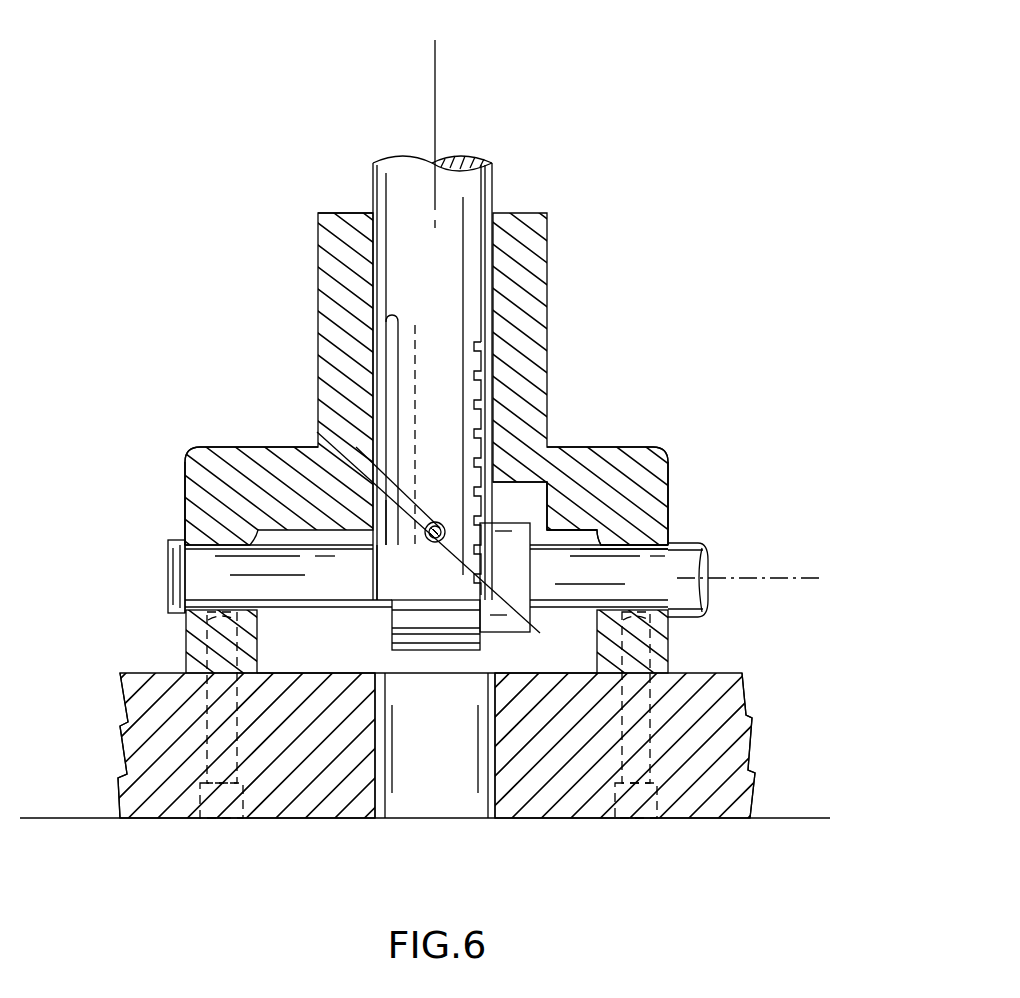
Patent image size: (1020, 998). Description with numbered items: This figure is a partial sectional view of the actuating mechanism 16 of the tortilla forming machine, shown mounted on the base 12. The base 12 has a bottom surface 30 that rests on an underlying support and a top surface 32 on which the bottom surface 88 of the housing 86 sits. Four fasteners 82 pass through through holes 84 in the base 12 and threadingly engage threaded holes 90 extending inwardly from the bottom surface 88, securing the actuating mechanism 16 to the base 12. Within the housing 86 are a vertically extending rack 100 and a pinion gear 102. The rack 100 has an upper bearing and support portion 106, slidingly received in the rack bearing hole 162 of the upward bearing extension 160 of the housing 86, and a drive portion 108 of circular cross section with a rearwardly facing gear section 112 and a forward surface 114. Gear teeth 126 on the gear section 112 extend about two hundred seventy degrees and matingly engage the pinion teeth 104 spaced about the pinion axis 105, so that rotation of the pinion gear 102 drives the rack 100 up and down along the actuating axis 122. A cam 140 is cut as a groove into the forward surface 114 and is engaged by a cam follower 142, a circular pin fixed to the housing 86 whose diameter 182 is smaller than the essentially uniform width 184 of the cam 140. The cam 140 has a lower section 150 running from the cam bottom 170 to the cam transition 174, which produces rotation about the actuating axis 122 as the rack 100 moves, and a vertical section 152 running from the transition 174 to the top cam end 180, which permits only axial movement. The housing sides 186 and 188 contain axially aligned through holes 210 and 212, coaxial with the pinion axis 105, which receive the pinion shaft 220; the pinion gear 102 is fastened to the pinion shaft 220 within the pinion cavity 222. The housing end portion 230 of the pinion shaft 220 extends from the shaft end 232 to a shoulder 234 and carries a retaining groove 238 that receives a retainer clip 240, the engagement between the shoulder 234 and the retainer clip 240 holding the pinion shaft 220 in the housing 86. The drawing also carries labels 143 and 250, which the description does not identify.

The base 12 is at (757, 683).
The actuating mechanism 16 is at (648, 378).
The bottom surface 30 is at (692, 820).
The top surface 32 is at (160, 672).
The fasteners 82 is at (222, 706).
The through holes 84 is at (240, 742).
The housing 86 is at (672, 452).
The bottom surface 88 is at (690, 677).
The threaded holes 90 is at (227, 635).
The rack 100 is at (473, 278).
The pinion gear 102 is at (478, 648).
The pinion teeth 104 is at (450, 652).
The pinion axis 105 is at (780, 578).
The upper bearing and support portion 106 is at (472, 252).
The drive portion 108 is at (457, 362).
The gear section 112 is at (495, 390).
The forward surface 114 is at (432, 400).
The actuating axis 122 is at (440, 85).
The gear teeth 126 is at (493, 512).
The cam 140 is at (445, 520).
The cam follower 142 is at (488, 538).
The lower plate 143 is at (500, 597).
The lower section 150 is at (418, 498).
The vertical section 152 is at (393, 357).
The upward bearing extension 160 is at (327, 260).
The rack bearing hole 162 is at (353, 215).
The cam bottom 170 is at (436, 543).
The cam transition 174 is at (397, 487).
The top cam end 180 is at (390, 340).
The diameter 182 is at (388, 505).
The width 184 is at (407, 485).
The side 186 is at (185, 490).
The side 188 is at (670, 475).
The through hole 210 is at (213, 540).
The through hole 212 is at (632, 545).
The pinion shaft 220 is at (655, 585).
The pinion cavity 222 is at (343, 645).
The housing end portion 230 is at (222, 580).
The shaft end 232 is at (170, 548).
The shoulder 234 is at (617, 548).
The retaining groove 238 is at (175, 572).
The retainer clip 240 is at (185, 540).
The shaft right end 250 is at (697, 560).